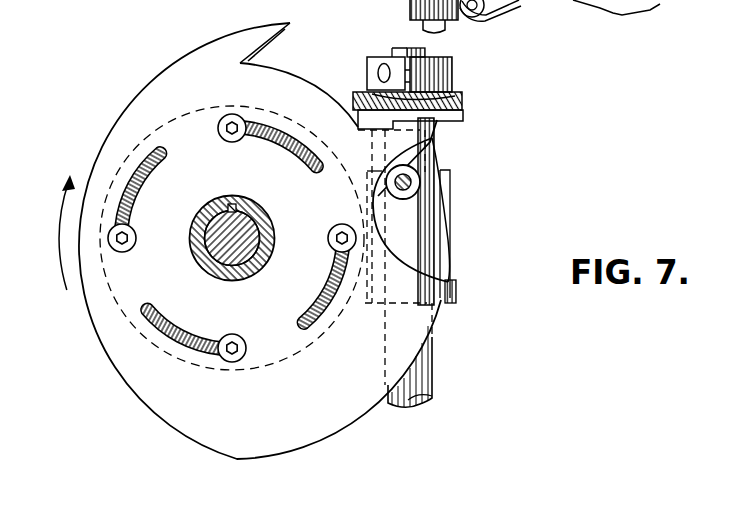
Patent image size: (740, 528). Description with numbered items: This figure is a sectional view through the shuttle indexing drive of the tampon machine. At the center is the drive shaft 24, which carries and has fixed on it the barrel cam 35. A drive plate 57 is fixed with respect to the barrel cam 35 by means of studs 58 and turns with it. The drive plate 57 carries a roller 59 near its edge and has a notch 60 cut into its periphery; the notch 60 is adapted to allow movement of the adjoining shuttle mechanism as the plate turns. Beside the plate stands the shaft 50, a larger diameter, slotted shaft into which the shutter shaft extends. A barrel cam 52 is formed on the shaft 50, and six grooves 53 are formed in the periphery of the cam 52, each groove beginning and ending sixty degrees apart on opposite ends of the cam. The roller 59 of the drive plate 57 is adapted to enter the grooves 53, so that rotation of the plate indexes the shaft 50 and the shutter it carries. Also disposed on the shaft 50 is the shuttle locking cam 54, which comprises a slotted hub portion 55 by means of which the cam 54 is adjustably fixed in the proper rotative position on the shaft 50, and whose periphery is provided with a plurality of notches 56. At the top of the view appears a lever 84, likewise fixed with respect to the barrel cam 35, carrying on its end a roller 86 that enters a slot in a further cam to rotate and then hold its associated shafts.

The drive plate 57 is at (143, 32).
The notch 60 is at (300, 78).
The barrel cam 35 is at (200, 106).
The studs 58 is at (226, 141).
The drive shaft 24 is at (256, 226).
The barrel cam 52 is at (452, 286).
The shaft 50 is at (433, 360).
The grooves 53 is at (406, 212).
The roller 59 is at (418, 182).
The shuttle locking cam 54 is at (450, 117).
The notches 56 is at (448, 108).
The slotted hub portion 55 is at (453, 73).
The roller 86 is at (480, 18).
The lever 84 is at (537, 1).